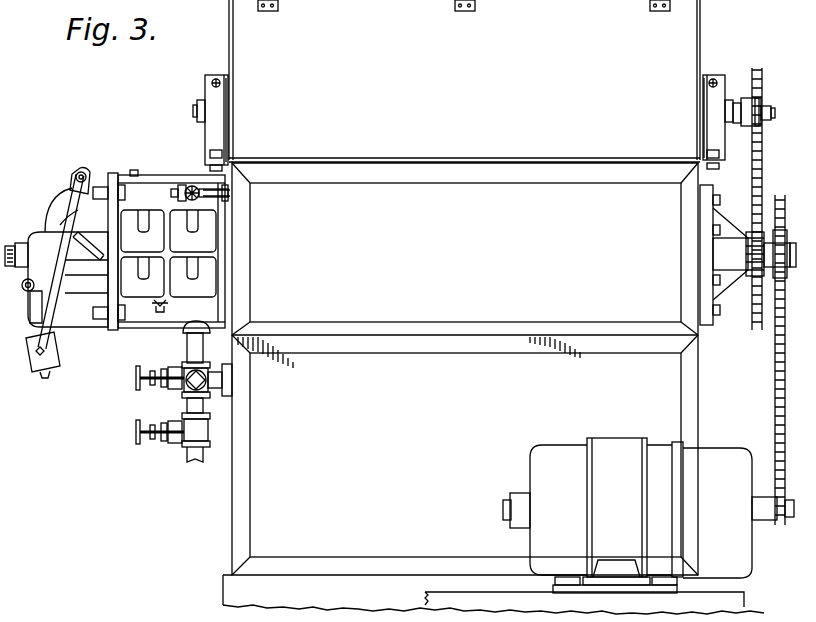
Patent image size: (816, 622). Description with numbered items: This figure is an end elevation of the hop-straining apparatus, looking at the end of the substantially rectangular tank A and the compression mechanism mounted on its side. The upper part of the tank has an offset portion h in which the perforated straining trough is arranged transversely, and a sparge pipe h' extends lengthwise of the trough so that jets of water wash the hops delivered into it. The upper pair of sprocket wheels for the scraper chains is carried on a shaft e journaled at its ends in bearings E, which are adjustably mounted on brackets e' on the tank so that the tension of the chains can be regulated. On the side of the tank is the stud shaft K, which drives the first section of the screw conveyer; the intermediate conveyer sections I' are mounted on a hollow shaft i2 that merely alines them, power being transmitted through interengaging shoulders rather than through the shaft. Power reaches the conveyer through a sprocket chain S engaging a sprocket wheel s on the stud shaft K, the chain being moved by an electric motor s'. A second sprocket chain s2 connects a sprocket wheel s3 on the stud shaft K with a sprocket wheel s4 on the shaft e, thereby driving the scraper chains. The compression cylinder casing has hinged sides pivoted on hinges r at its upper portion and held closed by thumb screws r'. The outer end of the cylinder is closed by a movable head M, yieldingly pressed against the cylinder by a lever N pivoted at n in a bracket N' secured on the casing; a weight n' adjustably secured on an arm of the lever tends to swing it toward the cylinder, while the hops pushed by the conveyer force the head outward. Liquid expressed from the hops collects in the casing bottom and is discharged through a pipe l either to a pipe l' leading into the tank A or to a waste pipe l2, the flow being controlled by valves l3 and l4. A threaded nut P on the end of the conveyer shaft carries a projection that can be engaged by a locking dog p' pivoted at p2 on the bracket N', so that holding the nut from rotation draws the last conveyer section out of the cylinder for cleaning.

The bearings E is at (203, 102).
The shaft e is at (748, 85).
The brackets e' is at (463, 120).
The pivot n is at (71, 247).
The lever N is at (56, 196).
The hinges r is at (178, 176).
The sparge pipe h' is at (241, 205).
The nut P is at (25, 240).
The bracket N' is at (60, 230).
The shaft i2 is at (76, 255).
The intermediate conveyer sections I' is at (171, 249).
The movable head M is at (105, 283).
The thumb screws r' is at (154, 289).
The pivot p2 is at (22, 285).
The locking dog p' is at (21, 307).
The weight n' is at (55, 355).
The pipe l is at (179, 343).
The pipe l' is at (229, 385).
The valve l3 is at (158, 386).
The valve l4 is at (170, 442).
The waste pipe l2 is at (192, 456).
The offset portion of the tank h is at (465, 258).
The tank A is at (465, 455).
The sprocket wheel s4 is at (758, 70).
The second sprocket chain s2 is at (763, 146).
The sprocket wheel s is at (780, 353).
The sprocket wheel s3 is at (755, 280).
The stud shaft K is at (774, 275).
The sprocket chain S is at (774, 392).
The electric motor s' is at (648, 515).